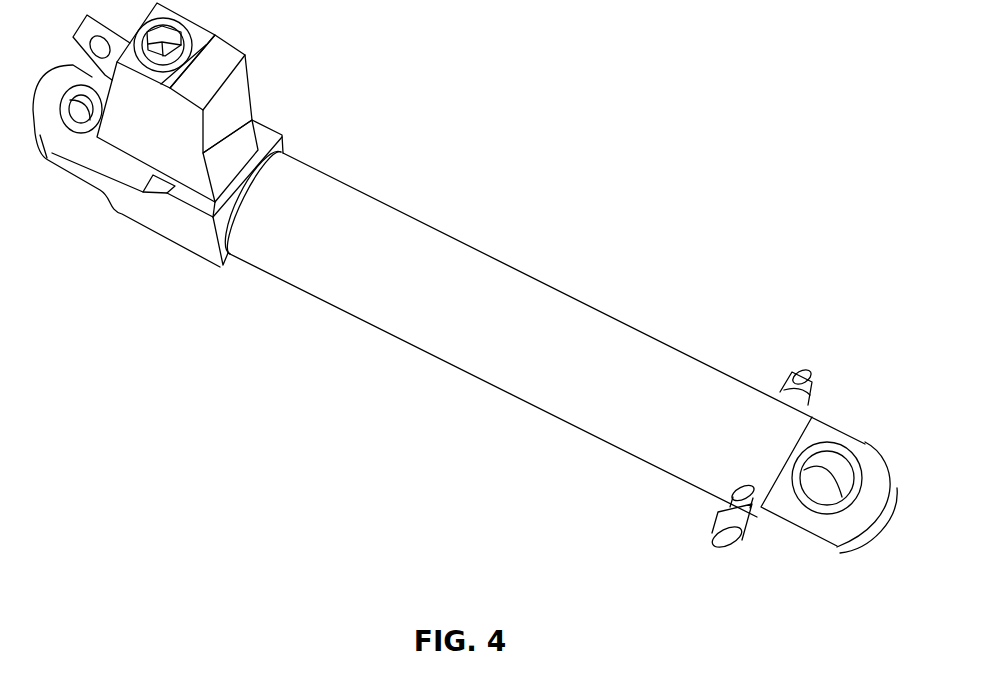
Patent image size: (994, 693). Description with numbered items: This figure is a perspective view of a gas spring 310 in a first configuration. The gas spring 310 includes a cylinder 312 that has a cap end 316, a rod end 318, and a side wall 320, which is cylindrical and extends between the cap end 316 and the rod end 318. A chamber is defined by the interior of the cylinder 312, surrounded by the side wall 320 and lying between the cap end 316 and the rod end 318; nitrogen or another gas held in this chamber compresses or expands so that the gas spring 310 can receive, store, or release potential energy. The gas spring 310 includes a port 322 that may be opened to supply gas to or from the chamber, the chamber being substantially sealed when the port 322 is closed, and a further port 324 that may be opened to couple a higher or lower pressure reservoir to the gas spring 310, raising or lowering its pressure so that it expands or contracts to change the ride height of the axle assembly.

The gas spring 310 is at (465, 292).
The cylinder 312 is at (705, 392).
The cap end 316 is at (770, 551).
The rod end 318 is at (226, 285).
The side wall 320 is at (455, 384).
The port 322 is at (259, 31).
The port 324 is at (810, 373).